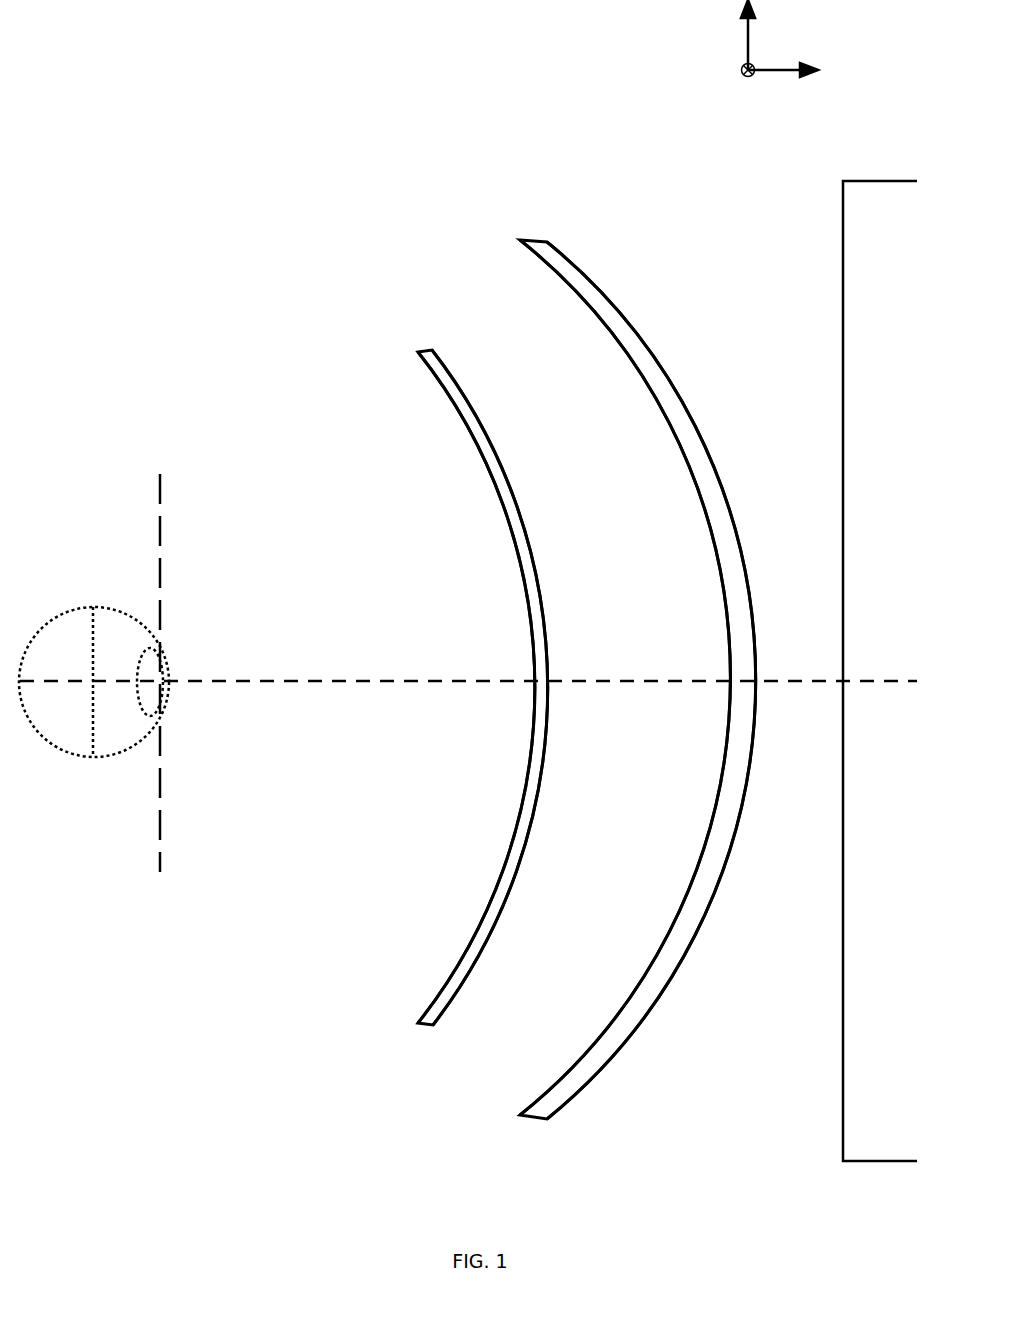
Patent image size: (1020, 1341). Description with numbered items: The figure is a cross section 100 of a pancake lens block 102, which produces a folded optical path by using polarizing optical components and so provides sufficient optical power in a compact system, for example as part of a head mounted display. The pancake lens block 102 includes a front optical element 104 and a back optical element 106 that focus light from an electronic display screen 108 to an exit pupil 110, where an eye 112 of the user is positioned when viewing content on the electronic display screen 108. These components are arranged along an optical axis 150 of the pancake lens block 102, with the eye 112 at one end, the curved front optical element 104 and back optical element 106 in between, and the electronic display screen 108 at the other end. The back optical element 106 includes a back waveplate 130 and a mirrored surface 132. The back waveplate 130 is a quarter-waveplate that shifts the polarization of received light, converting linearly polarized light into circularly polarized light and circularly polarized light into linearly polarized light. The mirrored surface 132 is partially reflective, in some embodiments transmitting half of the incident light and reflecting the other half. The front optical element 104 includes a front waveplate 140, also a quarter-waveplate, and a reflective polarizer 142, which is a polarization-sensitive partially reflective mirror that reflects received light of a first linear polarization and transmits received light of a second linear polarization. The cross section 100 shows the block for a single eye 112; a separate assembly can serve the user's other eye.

The cross section 100 is at (476, 580).
The pancake lens block 102 is at (398, 404).
The front optical element 104 is at (440, 380).
The back optical element 106 is at (586, 273).
The electronic display screen 108 is at (843, 232).
The exit pupil 110 is at (162, 882).
The eye 112 is at (88, 608).
The back waveplate 130 is at (668, 977).
The mirrored surface 132 is at (677, 915).
The front waveplate 140 is at (450, 990).
The reflective polarizer 142 is at (470, 937).
The optical axis 150 is at (892, 681).